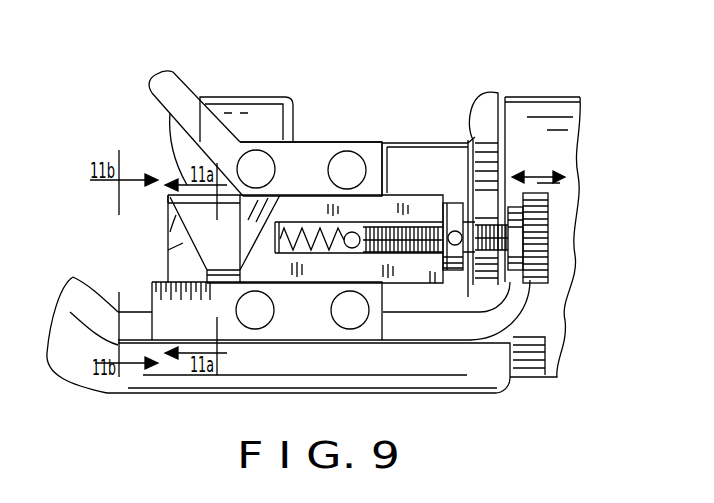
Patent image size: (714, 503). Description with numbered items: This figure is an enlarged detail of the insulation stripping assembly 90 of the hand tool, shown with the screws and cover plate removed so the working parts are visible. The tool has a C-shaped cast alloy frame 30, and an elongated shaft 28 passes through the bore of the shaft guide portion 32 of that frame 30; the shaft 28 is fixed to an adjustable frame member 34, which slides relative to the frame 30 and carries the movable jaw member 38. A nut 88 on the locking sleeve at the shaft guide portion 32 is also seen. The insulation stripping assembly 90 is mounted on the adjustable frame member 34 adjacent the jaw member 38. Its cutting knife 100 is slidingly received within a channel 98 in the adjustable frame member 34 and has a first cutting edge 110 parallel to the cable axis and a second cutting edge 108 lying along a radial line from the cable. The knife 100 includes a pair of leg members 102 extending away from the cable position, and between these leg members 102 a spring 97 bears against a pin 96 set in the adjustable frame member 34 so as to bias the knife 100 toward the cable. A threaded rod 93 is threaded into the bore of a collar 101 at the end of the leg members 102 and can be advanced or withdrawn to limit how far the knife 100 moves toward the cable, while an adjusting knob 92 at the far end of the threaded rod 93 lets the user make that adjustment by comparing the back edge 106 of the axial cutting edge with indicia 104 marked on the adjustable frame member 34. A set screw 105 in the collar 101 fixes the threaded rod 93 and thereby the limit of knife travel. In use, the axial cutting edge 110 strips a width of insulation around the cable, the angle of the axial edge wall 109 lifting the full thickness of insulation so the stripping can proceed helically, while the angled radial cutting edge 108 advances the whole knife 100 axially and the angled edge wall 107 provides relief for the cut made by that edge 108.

The elongated shaft 28 is at (420, 143).
The frame 30 is at (480, 370).
The shaft guide portion 32 is at (541, 100).
The adjustable frame member 34 is at (302, 142).
The jaw member 38 is at (170, 117).
The nut 88 is at (487, 95).
The insulation stripping assembly 90 is at (343, 135).
The adjusting knob 92 is at (542, 222).
The threaded rod 93 is at (483, 222).
The pin 96 is at (350, 248).
The spring 97 is at (292, 251).
The channel 98 is at (382, 160).
The cutting knife 100 is at (162, 217).
The collar 101 is at (452, 270).
The leg members 102 is at (298, 196).
The indicia 104 is at (192, 298).
The set screw 105 is at (460, 245).
The back edge 106 is at (193, 244).
The angled edge wall 107 is at (170, 232).
The second cutting edge 108 is at (178, 216).
The axial edge wall 109 is at (168, 250).
The first cutting edge 110 is at (168, 194).